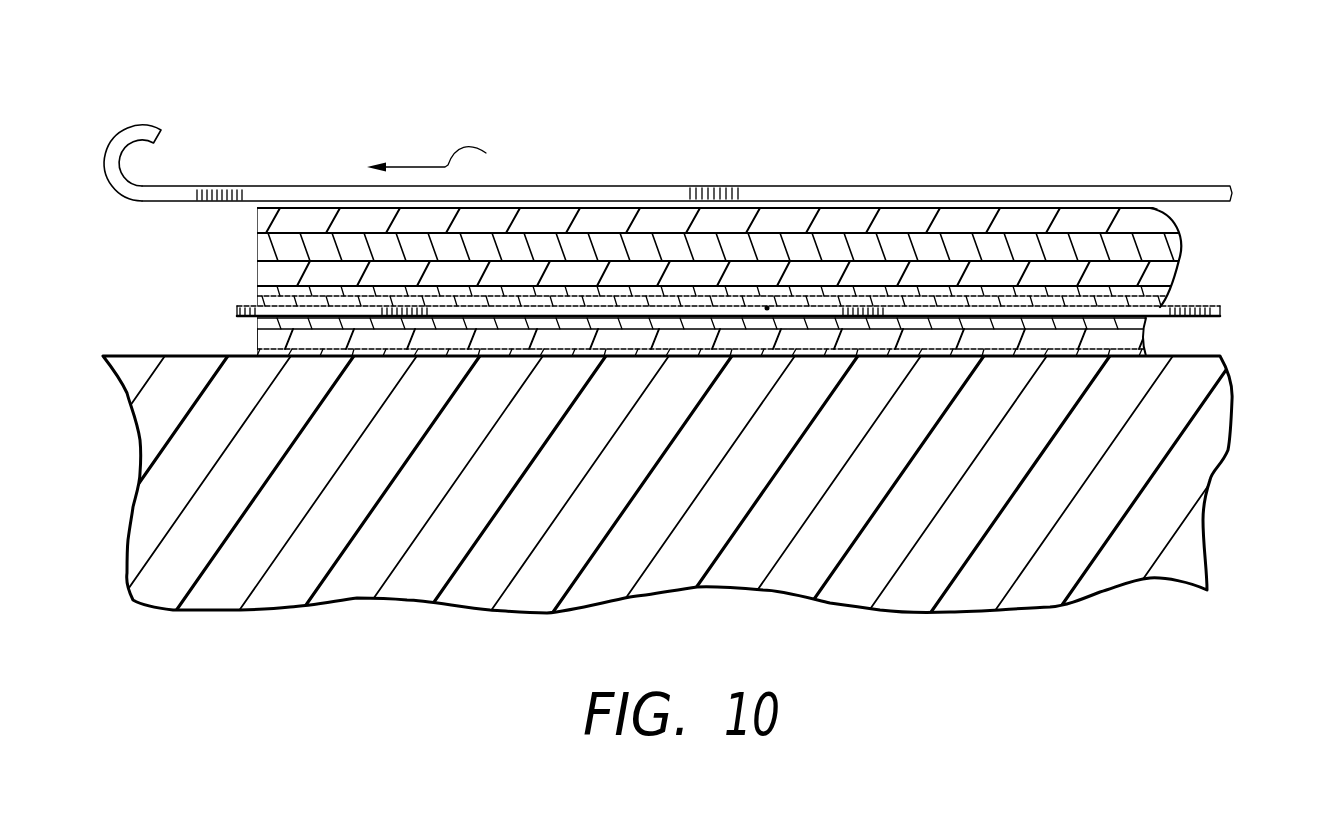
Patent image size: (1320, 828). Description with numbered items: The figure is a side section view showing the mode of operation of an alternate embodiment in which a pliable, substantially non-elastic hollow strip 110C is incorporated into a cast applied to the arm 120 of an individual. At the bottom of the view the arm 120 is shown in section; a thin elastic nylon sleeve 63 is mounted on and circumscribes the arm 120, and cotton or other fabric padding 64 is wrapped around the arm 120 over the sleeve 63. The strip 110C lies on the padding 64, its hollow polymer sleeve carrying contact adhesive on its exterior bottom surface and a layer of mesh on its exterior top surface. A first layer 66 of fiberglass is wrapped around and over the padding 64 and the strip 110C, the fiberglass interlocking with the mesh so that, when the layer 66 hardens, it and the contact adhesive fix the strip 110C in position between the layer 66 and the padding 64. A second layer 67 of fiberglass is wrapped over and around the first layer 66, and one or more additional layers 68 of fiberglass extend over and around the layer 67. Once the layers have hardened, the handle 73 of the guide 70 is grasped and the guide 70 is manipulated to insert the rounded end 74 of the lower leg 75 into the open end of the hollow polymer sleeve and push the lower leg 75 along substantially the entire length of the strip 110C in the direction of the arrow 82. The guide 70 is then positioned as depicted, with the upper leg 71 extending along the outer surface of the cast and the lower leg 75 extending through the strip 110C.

The handle 73 is at (159, 137).
The arrow 82 is at (445, 156).
The guide 70 is at (709, 248).
The lower leg 75 is at (767, 308).
The upper leg 71 is at (832, 188).
The additional layers of fiberglass 68 is at (257, 214).
The second layer of fiberglass 67 is at (257, 246).
The rounded end 74 is at (238, 310).
The padding 64 is at (257, 340).
The first layer of fiberglass 66 is at (1158, 268).
The strip 110C is at (709, 288).
The sleeve 63 is at (715, 325).
The arm 120 is at (393, 613).